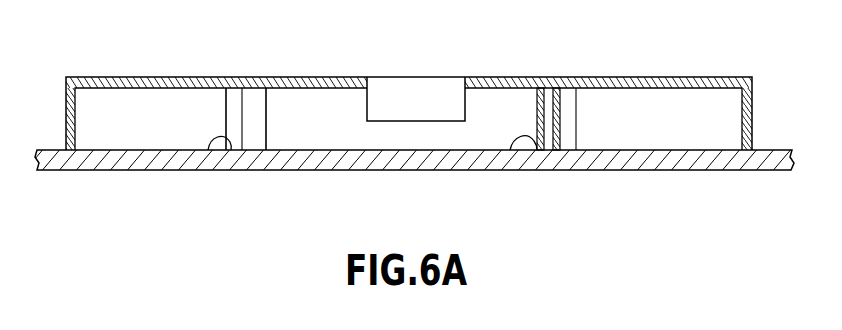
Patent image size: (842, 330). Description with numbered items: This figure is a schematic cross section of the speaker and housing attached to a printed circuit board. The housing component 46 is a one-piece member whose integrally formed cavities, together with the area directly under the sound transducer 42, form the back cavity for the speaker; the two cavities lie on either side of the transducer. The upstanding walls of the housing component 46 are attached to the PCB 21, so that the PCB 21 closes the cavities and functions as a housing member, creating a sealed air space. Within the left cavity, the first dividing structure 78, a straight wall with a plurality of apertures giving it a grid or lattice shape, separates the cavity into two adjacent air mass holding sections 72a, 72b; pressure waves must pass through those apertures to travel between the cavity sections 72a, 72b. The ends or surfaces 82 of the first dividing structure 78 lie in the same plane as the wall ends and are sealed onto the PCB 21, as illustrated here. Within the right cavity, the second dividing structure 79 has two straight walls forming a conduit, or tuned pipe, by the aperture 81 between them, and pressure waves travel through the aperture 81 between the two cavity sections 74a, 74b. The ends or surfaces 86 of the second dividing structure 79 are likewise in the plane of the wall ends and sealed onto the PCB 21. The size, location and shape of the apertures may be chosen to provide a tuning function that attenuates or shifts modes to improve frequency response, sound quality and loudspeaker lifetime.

The PCB 21 is at (73, 170).
The sound transducer 42 is at (400, 103).
The housing component 46 is at (683, 77).
The cavity section 72a is at (283, 102).
The cavity section 72b is at (153, 103).
The cavity section 74a is at (490, 103).
The cavity section 74b is at (627, 100).
The first dividing structure 78 is at (260, 102).
The second dividing structure 79 is at (557, 88).
The aperture 81 is at (548, 102).
The ends or surfaces of the first dividing structure 82 is at (208, 150).
The ends or surfaces of the second dividing structure 86 is at (513, 150).